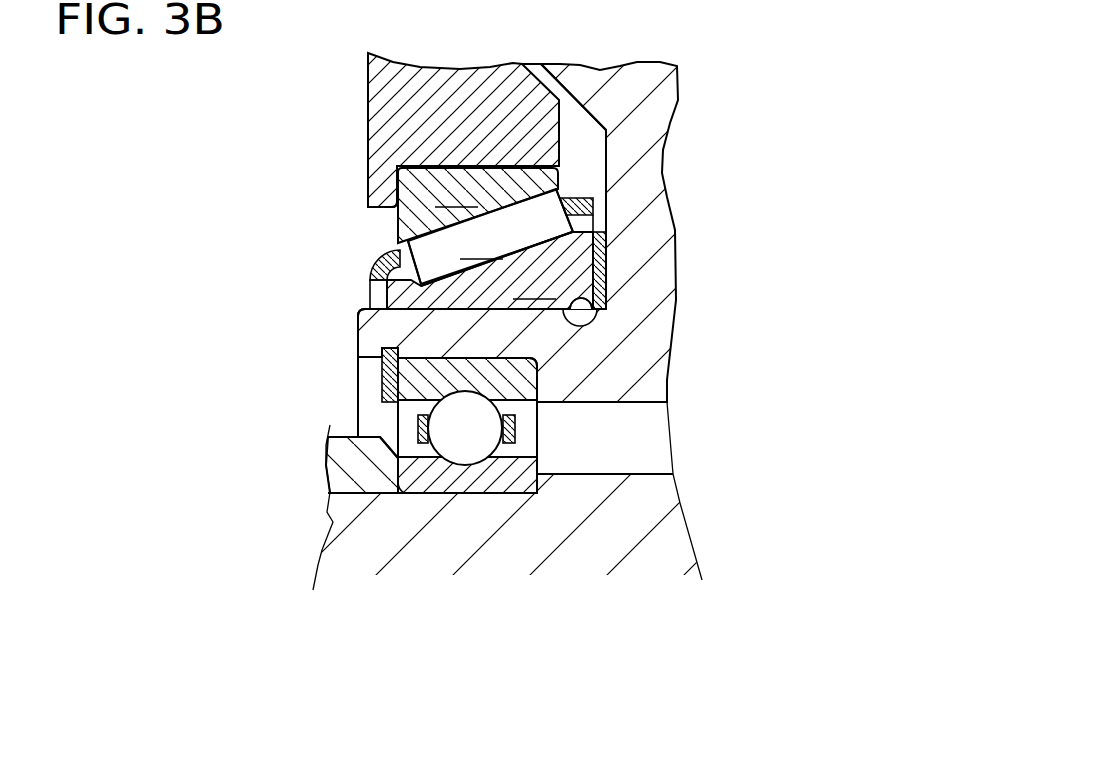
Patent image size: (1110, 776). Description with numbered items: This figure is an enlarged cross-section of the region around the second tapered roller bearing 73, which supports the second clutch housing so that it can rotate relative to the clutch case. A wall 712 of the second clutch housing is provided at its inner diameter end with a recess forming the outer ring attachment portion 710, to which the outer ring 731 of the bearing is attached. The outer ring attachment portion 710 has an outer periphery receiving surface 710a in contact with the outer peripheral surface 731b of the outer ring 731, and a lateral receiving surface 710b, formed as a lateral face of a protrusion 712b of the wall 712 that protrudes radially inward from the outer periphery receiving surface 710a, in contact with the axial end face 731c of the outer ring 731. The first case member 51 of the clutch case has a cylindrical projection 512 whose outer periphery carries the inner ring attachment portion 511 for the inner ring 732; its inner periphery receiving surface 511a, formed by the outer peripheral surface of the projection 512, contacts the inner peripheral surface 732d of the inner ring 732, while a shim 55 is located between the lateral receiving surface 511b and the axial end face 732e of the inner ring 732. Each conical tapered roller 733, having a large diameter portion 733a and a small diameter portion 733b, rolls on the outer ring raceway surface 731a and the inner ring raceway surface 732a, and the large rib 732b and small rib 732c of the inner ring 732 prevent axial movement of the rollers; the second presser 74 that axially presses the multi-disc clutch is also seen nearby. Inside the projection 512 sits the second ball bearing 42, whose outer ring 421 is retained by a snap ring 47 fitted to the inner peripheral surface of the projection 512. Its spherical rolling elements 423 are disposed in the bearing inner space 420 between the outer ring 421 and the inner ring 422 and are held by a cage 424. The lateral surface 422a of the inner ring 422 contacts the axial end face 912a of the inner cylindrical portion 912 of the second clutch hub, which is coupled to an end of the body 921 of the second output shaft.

The second ball bearing 42 is at (405, 519).
The snap ring 47 is at (377, 364).
The first case member 51 is at (660, 100).
The shim 55 is at (596, 311).
The second tapered roller bearing 73 is at (581, 163).
The second presser 74 is at (584, 206).
The bearing inner space 420 is at (400, 410).
The outer ring 421 is at (537, 493).
The inner ring 422 is at (433, 495).
The lateral surface 422a is at (397, 483).
The rolling elements 423 is at (456, 450).
The cage 424 is at (512, 447).
The inner ring attachment portion 511 is at (384, 294).
The inner periphery receiving surface 511a is at (610, 309).
The lateral receiving surface 511b is at (607, 287).
The cylindrical projection 512 is at (358, 328).
The outer ring attachment portion 710 is at (416, 162).
The outer periphery receiving surface 710a is at (458, 157).
The lateral receiving surface 710b is at (385, 200).
The wall 712 is at (368, 55).
The protrusion 712b is at (406, 243).
The outer ring 731 is at (478, 205).
The outer ring raceway surface 731a is at (526, 166).
The outer peripheral surface 731b is at (492, 168).
The axial end face 731c is at (397, 190).
The inner ring 732 is at (490, 270).
The inner ring raceway surface 732a is at (416, 250).
The large rib 732b is at (607, 233).
The small rib 732c is at (382, 270).
The inner peripheral surface 732d is at (586, 306).
The axial end face 732e is at (607, 262).
The tapered roller 733 is at (490, 236).
The large diameter portion 733a is at (558, 227).
The small diameter portion 733b is at (414, 262).
The inner cylindrical portion 912 is at (337, 473).
The axial end face 912a is at (397, 460).
The body 921 is at (362, 553).